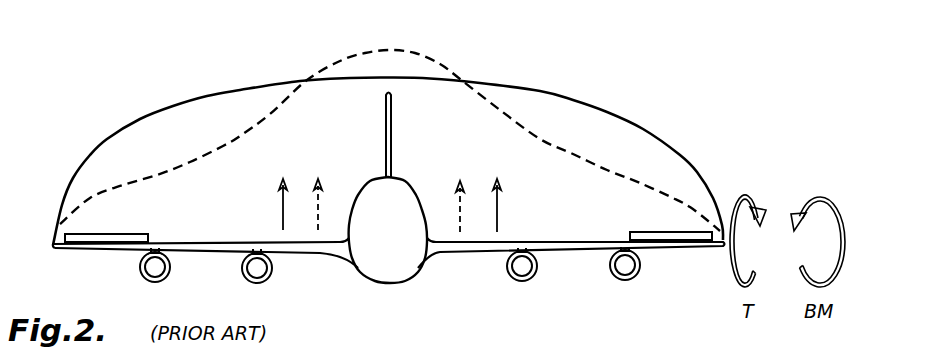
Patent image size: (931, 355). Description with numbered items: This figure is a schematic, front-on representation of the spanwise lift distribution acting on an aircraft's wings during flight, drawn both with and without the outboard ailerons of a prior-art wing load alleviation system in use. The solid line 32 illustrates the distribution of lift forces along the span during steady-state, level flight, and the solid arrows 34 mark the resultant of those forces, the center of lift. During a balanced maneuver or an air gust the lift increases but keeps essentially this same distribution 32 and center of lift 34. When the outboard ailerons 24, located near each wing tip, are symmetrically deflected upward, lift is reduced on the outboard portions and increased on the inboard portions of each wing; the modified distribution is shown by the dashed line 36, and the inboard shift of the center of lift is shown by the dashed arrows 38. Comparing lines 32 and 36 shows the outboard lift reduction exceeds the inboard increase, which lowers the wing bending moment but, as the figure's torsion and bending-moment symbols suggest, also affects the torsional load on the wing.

The outboard ailerons 24 is at (138, 236).
The solid line 32 is at (651, 131).
The solid arrows 34 is at (283, 212).
The dashed line 36 is at (553, 142).
The dashed arrows 38 is at (322, 200).